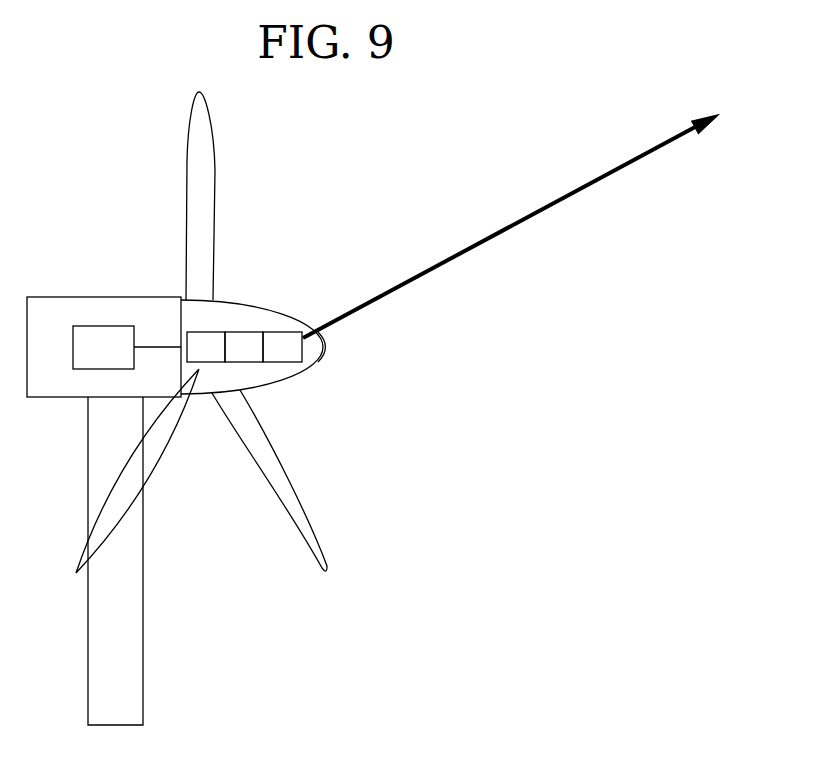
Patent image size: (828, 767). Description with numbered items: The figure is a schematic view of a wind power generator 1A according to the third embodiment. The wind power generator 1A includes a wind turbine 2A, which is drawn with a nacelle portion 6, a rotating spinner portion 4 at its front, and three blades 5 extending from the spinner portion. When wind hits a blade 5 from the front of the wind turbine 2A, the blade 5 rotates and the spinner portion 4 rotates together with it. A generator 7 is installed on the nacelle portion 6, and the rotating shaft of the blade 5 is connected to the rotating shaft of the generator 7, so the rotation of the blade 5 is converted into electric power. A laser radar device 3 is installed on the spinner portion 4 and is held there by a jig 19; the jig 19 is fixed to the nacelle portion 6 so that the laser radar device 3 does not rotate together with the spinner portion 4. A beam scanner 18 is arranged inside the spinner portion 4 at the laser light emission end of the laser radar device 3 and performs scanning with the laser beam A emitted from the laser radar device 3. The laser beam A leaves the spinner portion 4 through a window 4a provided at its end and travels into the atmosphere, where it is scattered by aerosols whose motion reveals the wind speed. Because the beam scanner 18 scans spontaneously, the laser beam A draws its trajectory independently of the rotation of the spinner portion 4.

The wind power generator 1A is at (297, 208).
The wind turbine 2A is at (153, 268).
The laser radar device 3 is at (250, 332).
The spinner portion 4 is at (201, 393).
The window 4a is at (324, 352).
The blade 5 is at (205, 155).
The nacelle portion 6 is at (62, 302).
The generator 7 is at (85, 369).
The beam scanner 18 is at (285, 332).
The jig 19 is at (215, 332).
The laser beam A is at (485, 243).